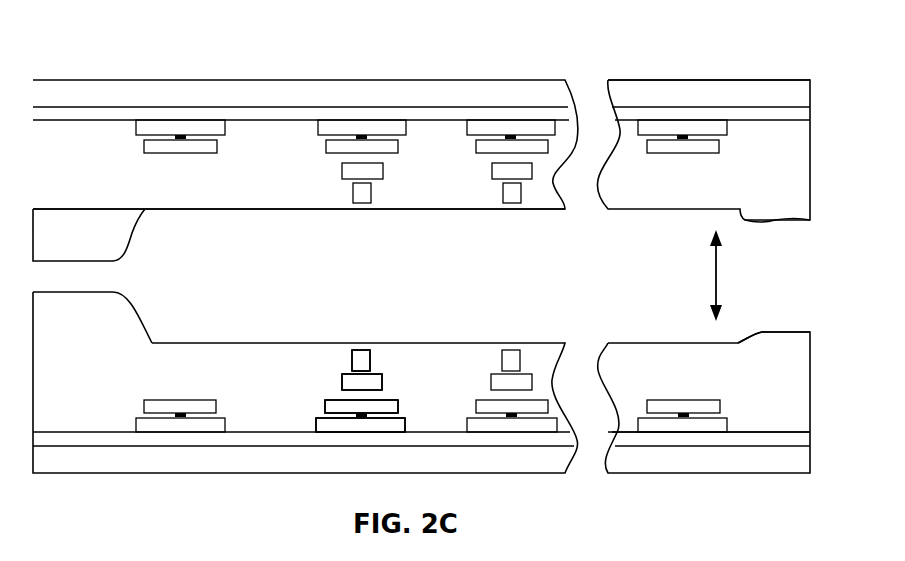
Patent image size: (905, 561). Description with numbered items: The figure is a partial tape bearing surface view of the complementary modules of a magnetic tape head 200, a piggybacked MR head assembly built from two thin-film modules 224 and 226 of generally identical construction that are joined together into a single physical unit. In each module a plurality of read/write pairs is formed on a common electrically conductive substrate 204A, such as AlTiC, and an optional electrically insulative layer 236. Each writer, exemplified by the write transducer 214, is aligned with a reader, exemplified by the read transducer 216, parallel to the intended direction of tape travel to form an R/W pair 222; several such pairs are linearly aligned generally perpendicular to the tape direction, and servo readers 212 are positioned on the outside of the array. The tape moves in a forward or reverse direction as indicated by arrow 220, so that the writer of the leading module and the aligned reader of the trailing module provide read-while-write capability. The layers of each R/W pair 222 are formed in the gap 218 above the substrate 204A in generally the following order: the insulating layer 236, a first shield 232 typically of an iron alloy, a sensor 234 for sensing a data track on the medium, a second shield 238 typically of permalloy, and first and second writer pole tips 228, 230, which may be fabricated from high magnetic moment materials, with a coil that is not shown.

The magnetic tape head 200 is at (351, 64).
The common substrate 204A is at (163, 105).
The gap 218 is at (226, 209).
The thin-film module 224 is at (735, 80).
The arrow 220 is at (716, 282).
The R/W pair 222 is at (372, 326).
The servo reader 212 is at (220, 390).
The second writer pole tip 230 is at (352, 352).
The first writer pole tip 228 is at (342, 381).
The second shield 238 is at (315, 402).
The sensor 234 is at (325, 405).
The first shield 232 is at (316, 424).
The write transducer 214 is at (438, 380).
The read transducer 216 is at (455, 420).
The electrically insulative layer 236 is at (803, 425).
The thin-film module 226 is at (723, 473).